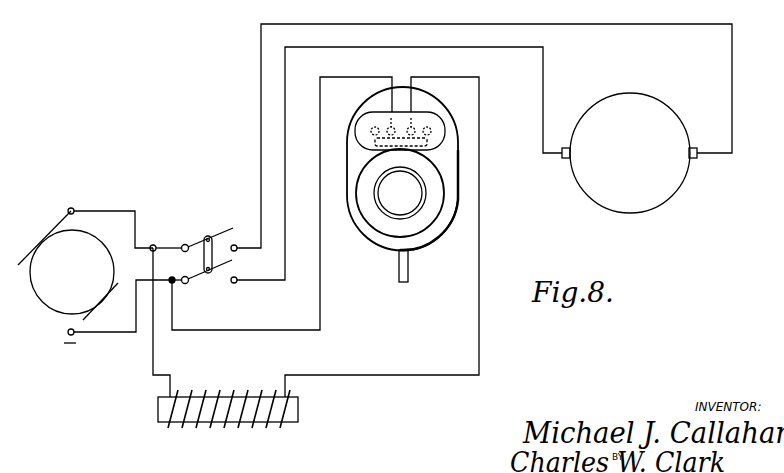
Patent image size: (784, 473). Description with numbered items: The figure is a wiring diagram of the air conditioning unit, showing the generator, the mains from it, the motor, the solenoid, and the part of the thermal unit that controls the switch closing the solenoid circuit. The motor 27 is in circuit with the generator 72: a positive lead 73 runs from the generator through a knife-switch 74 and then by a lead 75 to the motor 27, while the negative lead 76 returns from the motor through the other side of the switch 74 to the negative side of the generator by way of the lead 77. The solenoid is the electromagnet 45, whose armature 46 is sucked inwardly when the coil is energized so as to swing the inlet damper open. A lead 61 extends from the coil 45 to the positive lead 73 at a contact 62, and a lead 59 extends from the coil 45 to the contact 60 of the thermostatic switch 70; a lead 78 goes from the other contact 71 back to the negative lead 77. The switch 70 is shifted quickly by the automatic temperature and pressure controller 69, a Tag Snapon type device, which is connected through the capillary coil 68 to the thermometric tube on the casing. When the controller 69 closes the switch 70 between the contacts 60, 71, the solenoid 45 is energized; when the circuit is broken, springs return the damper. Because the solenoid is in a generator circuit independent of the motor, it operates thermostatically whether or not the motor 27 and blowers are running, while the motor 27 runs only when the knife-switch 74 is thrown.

The motor 27 is at (629, 153).
The electromagnet 45 is at (245, 423).
The armature 46 is at (293, 411).
The lead 59 is at (482, 258).
The contact 60 is at (415, 127).
The lead 61 is at (152, 360).
The contact 62 is at (153, 247).
The capillary coil 68 is at (399, 263).
The automatic controller 69 is at (433, 203).
The switch 70 is at (437, 132).
The contact 71 is at (388, 128).
The generator 72 is at (68, 262).
The positive lead 73 is at (119, 210).
The knife-switch 74 is at (213, 256).
The lead 75 is at (261, 126).
The negative lead 76 is at (547, 75).
The lead 77 is at (103, 333).
The lead 78 is at (295, 327).